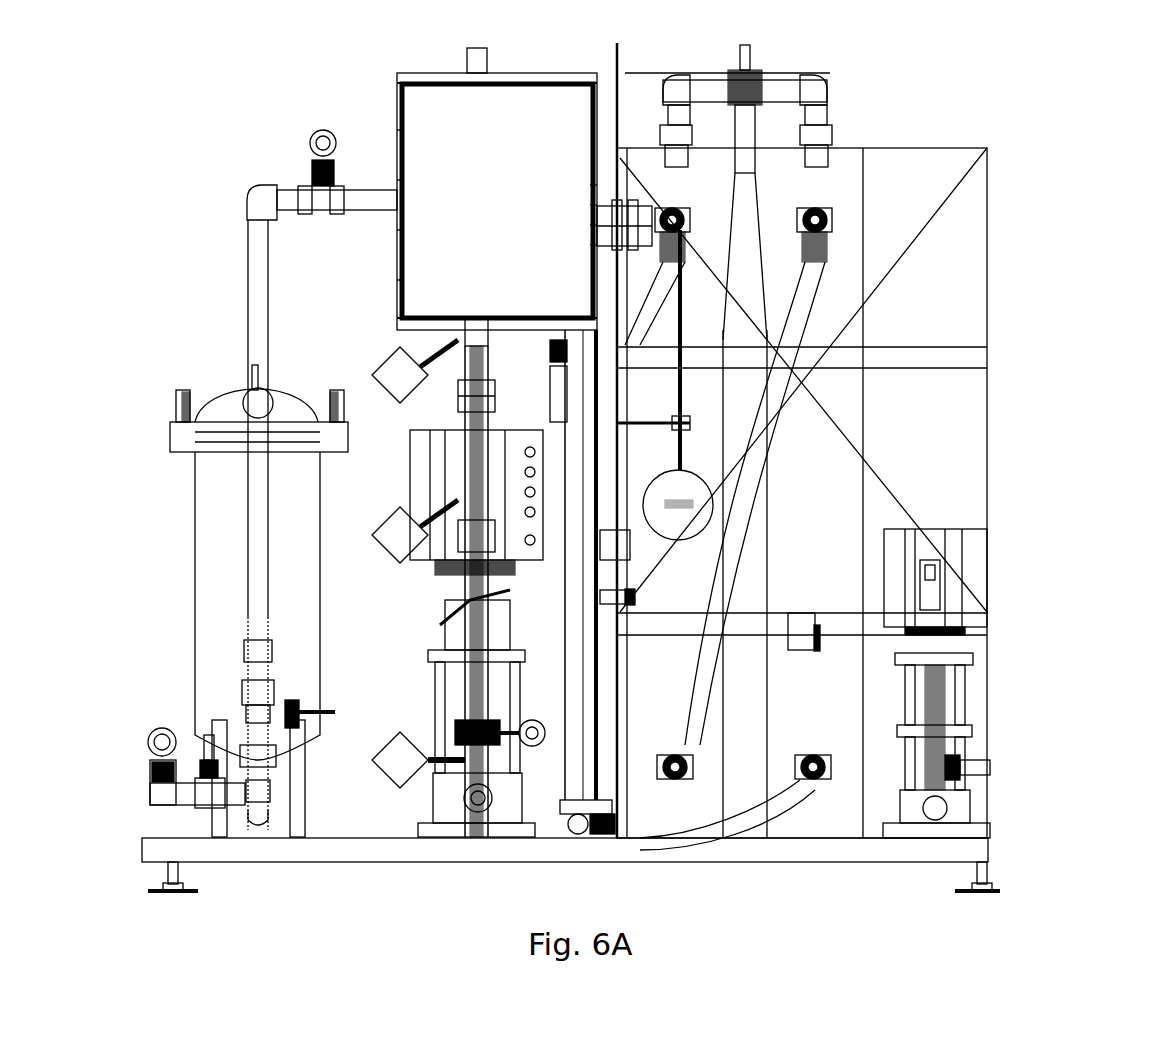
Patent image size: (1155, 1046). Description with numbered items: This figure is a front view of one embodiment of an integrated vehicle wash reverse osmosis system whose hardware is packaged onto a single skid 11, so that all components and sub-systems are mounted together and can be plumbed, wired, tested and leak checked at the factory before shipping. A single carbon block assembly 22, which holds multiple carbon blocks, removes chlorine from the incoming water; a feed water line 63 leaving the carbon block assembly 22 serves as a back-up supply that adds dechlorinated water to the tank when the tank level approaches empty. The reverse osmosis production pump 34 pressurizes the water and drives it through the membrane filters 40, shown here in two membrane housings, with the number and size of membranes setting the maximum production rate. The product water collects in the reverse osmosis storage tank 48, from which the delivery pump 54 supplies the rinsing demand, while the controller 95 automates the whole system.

The skid 11 is at (770, 847).
The carbon block assembly 22 is at (212, 528).
The reverse osmosis production pump 34 is at (426, 658).
The reverse osmosis membrane filters 40 is at (832, 467).
The reverse osmosis storage tank 48 is at (908, 312).
The delivery pump 54 is at (950, 682).
The feed water line 63 is at (246, 283).
The controller 95 is at (458, 143).